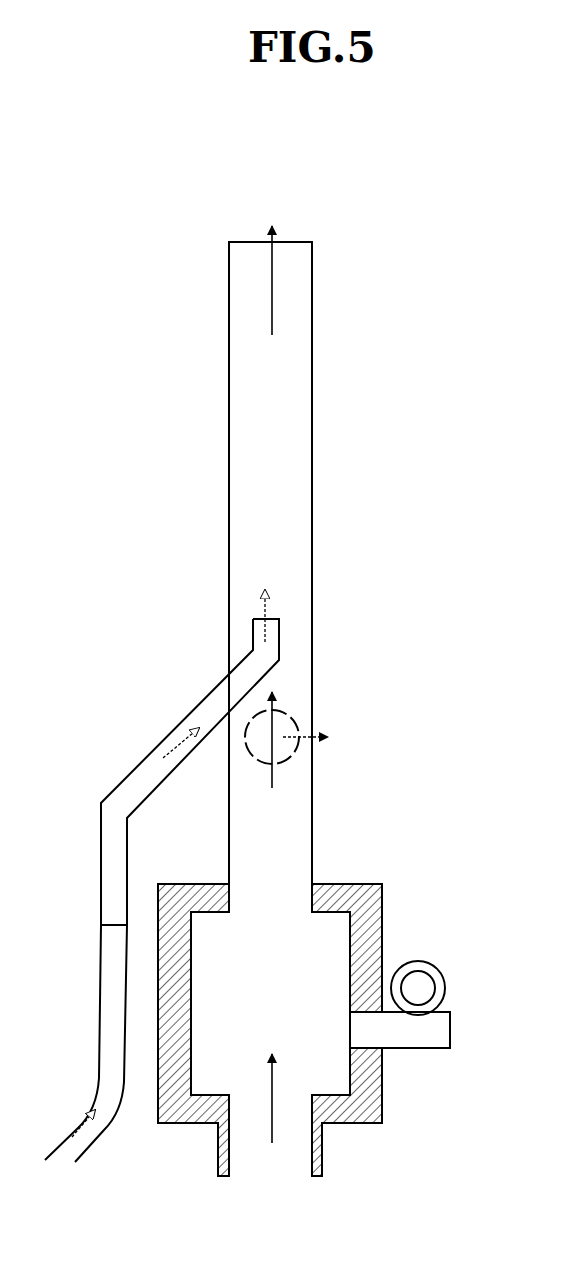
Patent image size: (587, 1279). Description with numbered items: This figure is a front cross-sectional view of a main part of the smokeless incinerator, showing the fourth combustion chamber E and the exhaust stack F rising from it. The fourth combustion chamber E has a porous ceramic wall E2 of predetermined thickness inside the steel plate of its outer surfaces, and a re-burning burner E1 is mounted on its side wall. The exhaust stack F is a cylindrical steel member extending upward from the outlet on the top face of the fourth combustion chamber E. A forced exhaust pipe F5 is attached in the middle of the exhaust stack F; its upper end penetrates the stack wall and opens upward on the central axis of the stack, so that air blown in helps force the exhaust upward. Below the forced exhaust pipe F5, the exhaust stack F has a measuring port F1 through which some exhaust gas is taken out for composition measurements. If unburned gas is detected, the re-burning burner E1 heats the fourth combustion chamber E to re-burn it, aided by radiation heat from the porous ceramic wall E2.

The exhaust stack F is at (271, 478).
The forced exhaust pipe F5 is at (248, 668).
The measuring port F1 is at (288, 757).
The fourth combustion chamber E is at (493, 883).
The porous ceramic wall E2 is at (366, 893).
The re-burning burner E1 is at (415, 996).